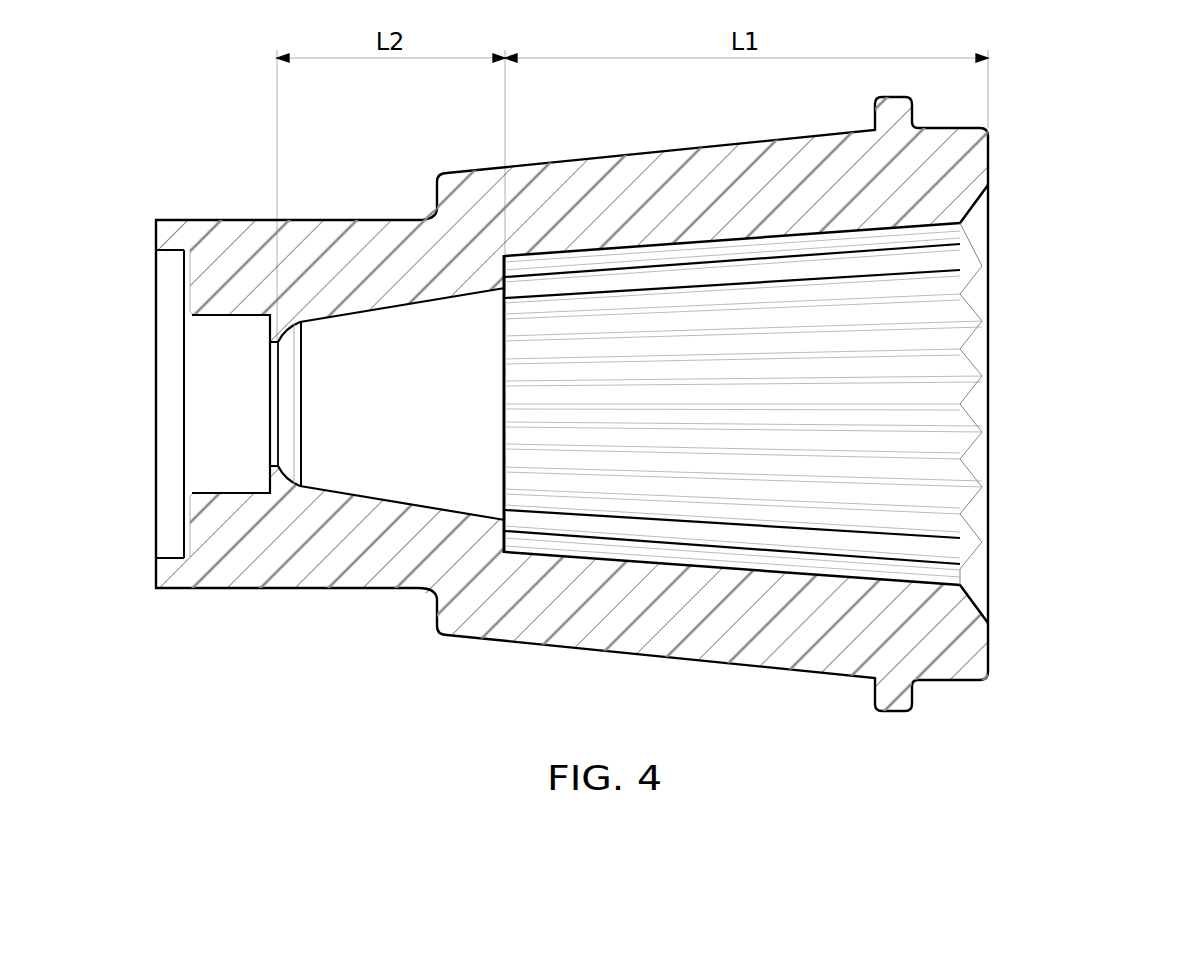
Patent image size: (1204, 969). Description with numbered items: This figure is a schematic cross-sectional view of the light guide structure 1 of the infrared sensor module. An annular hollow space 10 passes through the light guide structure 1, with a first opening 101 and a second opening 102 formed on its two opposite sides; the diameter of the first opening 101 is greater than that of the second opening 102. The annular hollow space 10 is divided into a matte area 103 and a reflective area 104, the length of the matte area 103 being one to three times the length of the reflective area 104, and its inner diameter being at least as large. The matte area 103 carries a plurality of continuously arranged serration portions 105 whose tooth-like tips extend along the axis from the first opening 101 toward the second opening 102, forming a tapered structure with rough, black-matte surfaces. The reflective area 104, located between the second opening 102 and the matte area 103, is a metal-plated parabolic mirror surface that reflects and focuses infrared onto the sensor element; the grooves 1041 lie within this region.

The light guide structure 1 is at (1042, 120).
The annular hollow space 10 is at (1145, 322).
The first opening 101 is at (1000, 500).
The second opening 102 is at (230, 470).
The matte area 103 is at (740, 550).
The reflective area 104 is at (394, 490).
The annular groove 1041 is at (338, 318).
The serration portions 105 is at (935, 347).